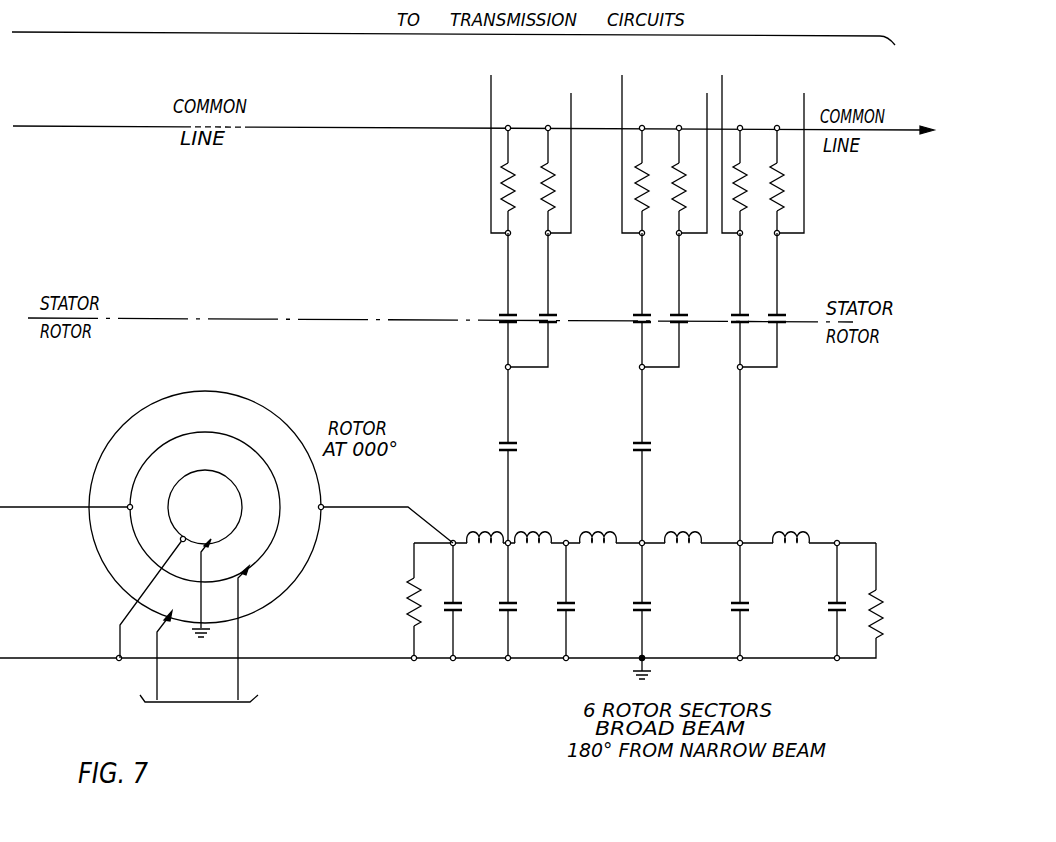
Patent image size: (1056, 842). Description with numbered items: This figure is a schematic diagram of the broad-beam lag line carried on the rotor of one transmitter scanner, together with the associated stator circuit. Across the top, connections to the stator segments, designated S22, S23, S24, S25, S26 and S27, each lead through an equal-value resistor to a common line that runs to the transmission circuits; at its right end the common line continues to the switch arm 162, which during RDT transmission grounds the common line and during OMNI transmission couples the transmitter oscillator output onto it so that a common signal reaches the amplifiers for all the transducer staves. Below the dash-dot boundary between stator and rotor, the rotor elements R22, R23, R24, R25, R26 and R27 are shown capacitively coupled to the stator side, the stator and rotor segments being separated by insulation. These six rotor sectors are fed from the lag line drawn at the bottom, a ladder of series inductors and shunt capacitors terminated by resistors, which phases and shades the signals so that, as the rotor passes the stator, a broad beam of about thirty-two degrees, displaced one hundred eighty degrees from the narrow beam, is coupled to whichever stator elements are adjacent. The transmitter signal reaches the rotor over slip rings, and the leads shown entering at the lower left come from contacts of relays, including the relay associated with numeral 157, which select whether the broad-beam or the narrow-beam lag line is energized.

The stator element connection S22 is at (550, 164).
The stator element connection S23 is at (687, 164).
The stator element connection S24 is at (782, 164).
The stator element connection S25 is at (739, 152).
The stator element connection S26 is at (637, 152).
The stator element connection S27 is at (507, 152).
The rotor element R22 is at (521, 388).
The rotor element R23 is at (658, 388).
The rotor element R24 is at (756, 388).
The rotor element R25 is at (798, 318).
The rotor element R26 is at (691, 315).
The rotor element R27 is at (556, 315).
The switch arm 162 is at (994, 141).
The relay 157 contacts 157 is at (178, 658).